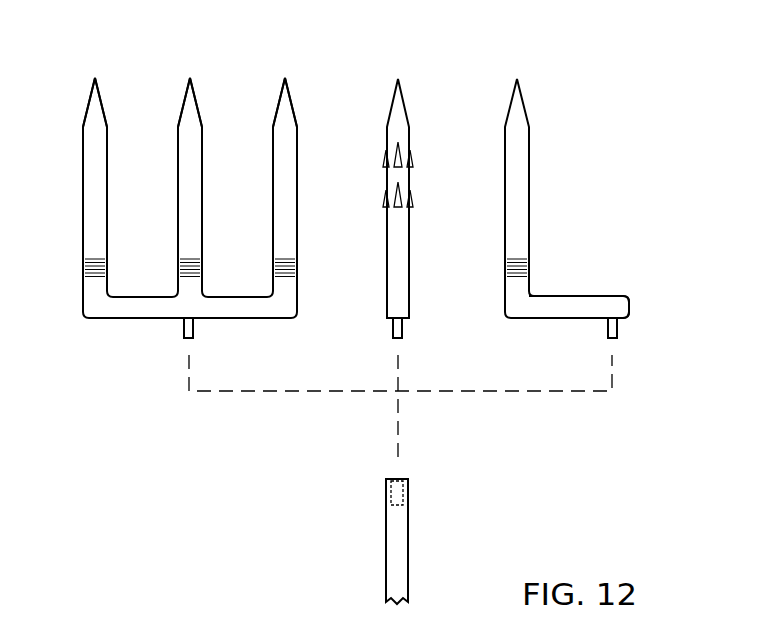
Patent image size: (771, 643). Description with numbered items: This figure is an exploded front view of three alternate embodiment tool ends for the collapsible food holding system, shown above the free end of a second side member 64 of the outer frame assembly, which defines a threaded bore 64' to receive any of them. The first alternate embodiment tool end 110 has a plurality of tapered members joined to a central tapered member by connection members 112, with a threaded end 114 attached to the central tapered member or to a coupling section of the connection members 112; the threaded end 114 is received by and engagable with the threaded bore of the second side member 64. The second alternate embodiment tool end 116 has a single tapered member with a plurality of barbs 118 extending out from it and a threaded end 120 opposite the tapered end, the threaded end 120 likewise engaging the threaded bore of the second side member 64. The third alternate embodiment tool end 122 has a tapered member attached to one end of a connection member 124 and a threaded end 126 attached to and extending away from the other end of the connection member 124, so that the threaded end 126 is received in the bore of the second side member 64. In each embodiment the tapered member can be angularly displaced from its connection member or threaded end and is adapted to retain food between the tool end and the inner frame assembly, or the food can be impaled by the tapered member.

The first alternate embodiment tool end 110 is at (282, 100).
The connection members 112 is at (131, 318).
The threaded end 114 is at (184, 340).
The second alternate embodiment tool end 116 is at (404, 103).
The barbs 118 is at (413, 158).
The threaded end 120 is at (393, 330).
The third alternate embodiment tool end 122 is at (529, 160).
The connection member 124 is at (577, 295).
The threaded end 126 is at (618, 337).
The second side member 64 is at (351, 541).
The threaded bore 64' is at (349, 485).